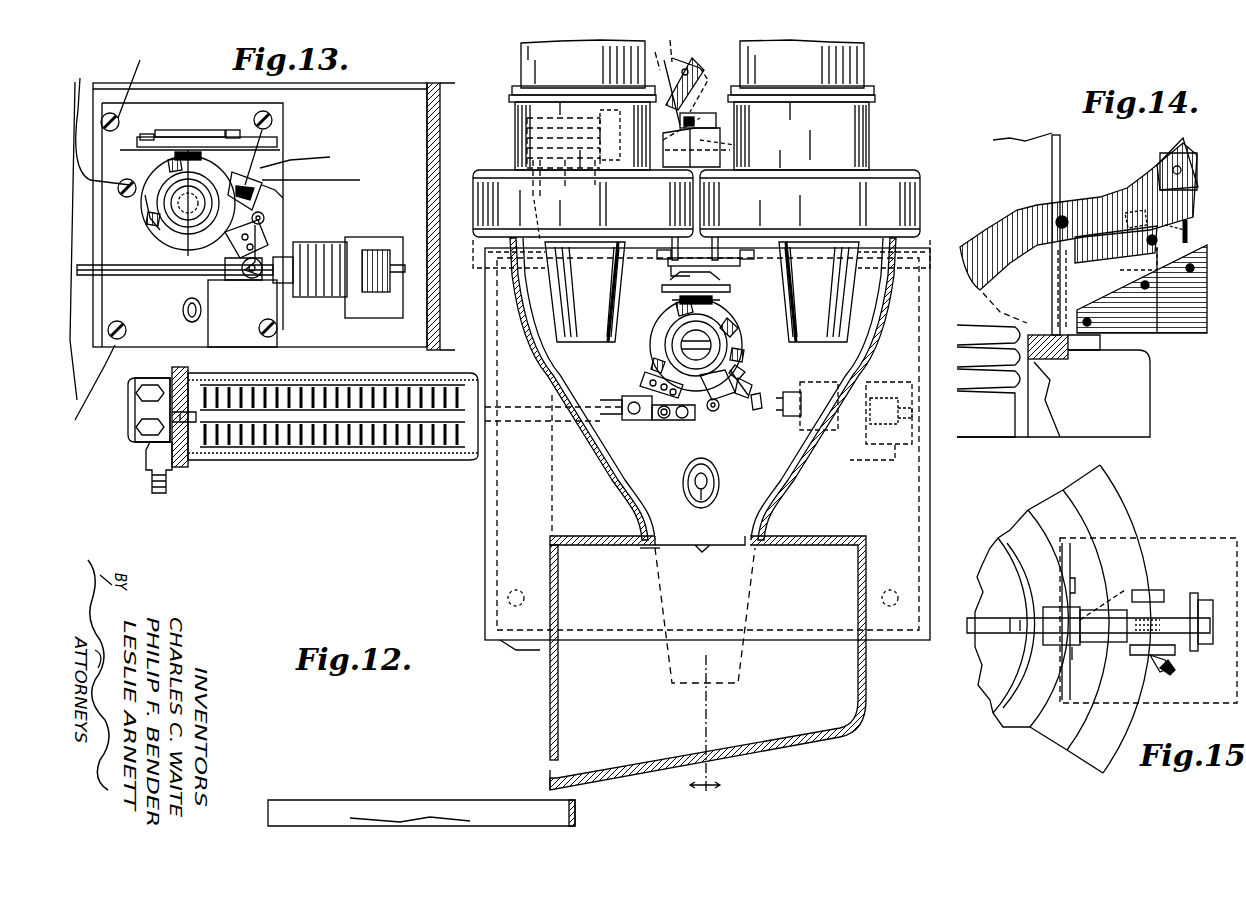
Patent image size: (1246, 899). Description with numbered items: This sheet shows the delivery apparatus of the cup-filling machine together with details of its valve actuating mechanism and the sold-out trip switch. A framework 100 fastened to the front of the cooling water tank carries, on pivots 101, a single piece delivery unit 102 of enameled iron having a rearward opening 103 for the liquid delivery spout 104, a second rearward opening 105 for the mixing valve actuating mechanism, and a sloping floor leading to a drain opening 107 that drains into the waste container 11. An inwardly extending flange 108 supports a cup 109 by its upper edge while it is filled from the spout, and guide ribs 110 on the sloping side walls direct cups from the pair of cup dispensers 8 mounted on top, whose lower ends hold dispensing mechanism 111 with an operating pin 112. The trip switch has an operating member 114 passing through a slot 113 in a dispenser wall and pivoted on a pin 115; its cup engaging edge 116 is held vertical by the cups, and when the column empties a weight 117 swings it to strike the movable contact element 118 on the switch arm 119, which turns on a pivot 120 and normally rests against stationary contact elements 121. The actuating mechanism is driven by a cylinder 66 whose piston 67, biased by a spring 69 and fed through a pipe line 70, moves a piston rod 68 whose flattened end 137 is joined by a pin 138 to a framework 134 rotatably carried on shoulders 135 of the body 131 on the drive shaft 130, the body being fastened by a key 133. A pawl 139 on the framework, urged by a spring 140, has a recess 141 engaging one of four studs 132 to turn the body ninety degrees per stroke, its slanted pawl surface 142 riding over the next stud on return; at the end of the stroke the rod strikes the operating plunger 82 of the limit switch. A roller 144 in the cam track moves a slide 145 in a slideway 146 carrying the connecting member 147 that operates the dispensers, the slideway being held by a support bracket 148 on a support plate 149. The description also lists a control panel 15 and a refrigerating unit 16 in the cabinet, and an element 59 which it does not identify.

In FIG. 12, the cup dispensers 8 is at (521, 70).
In FIG. 12, the waste container 11 is at (576, 806).
In FIG. 12, the control panel 15 is at (660, 53).
In FIG. 12, the refrigerating unit 16 is at (706, 732).
In FIG. 12, the knob 59 is at (884, 382).
In FIG. 13, the knob 59 is at (350, 250).
In FIG. 13, the cylinder 66 is at (255, 460).
In FIG. 13, the piston 67 is at (188, 462).
In FIG. 13, the piston rod 68 is at (150, 276).
In FIG. 13, the spring 69 is at (310, 447).
In FIG. 13, the pipe line 70 is at (152, 493).
In FIG. 12, the operating plunger 82 is at (835, 382).
In FIG. 13, the operating plunger 82 is at (242, 313).
In FIG. 12, the framework 100 is at (478, 565).
In FIG. 12, the pivots 101 is at (486, 246).
In FIG. 12, the delivery unit 102 is at (782, 537).
In FIG. 12, the rearward opening 103 is at (720, 490).
In FIG. 12, the liquid delivery spout 104 is at (720, 476).
In FIG. 13, the liquid delivery spout 104 is at (202, 308).
In FIG. 12, the second rearward opening 105 is at (757, 412).
In FIG. 12, the drain opening 107 is at (556, 773).
In FIG. 12, the inwardly extending flange 108 is at (650, 550).
In FIG. 12, the cup 109 is at (672, 666).
In FIG. 12, the guide ribs 110 is at (645, 470).
In FIG. 12, the dispensing mechanism 111 is at (515, 120).
In FIG. 14, the dispensing mechanism 111 is at (1082, 341).
In FIG. 15, the dispensing mechanism 111 is at (1063, 619).
In FIG. 12, the operating pin 112 is at (695, 228).
In FIG. 14, the slot 113 is at (1050, 185).
In FIG. 15, the slot 113 is at (1060, 627).
In FIG. 12, the operating member 114 is at (705, 72).
In FIG. 14, the operating member 114 is at (1030, 208).
In FIG. 15, the operating member 114 is at (1170, 660).
In FIG. 14, the pin 115 is at (1066, 214).
In FIG. 15, the pin 115 is at (1107, 593).
In FIG. 14, the cup engaging edge 116 is at (985, 245).
In FIG. 15, the cup engaging edge 116 is at (990, 625).
In FIG. 12, the weight 117 is at (688, 62).
In FIG. 14, the weight 117 is at (1193, 158).
In FIG. 15, the weight 117 is at (1190, 652).
In FIG. 12, the movable contact element 118 is at (700, 113).
In FIG. 14, the movable contact element 118 is at (1190, 232).
In FIG. 15, the movable contact element 118 is at (1195, 593).
In FIG. 12, the switch arm 119 is at (718, 128).
In FIG. 14, the switch arm 119 is at (1110, 267).
In FIG. 14, the pivot 120 is at (1150, 235).
In FIG. 12, the stationary contact elements 121 is at (640, 118).
In FIG. 14, the stationary contact elements 121 is at (1198, 222).
In FIG. 15, the stationary contact elements 121 is at (1165, 590).
In FIG. 12, the drive shaft 130 is at (668, 340).
In FIG. 13, the drive shaft 130 is at (178, 240).
In FIG. 12, the body 131 is at (660, 326).
In FIG. 13, the body 131 is at (180, 258).
In FIG. 12, the projecting studs 132 is at (676, 308).
In FIG. 13, the projecting studs 132 is at (168, 163).
In FIG. 12, the key 133 is at (746, 370).
In FIG. 13, the key 133 is at (148, 208).
In FIG. 13, the framework 134 is at (210, 203).
In FIG. 12, the shoulders 135 is at (776, 296).
In FIG. 12, the flattened end 137 is at (560, 437).
In FIG. 13, the flattened end 137 is at (279, 241).
In FIG. 12, the pin 138 is at (648, 420).
In FIG. 13, the pin 138 is at (252, 280).
In FIG. 12, the pawl 139 is at (712, 385).
In FIG. 13, the pawl 139 is at (262, 180).
In FIG. 12, the spring 140 is at (713, 412).
In FIG. 13, the spring 140 is at (262, 176).
In FIG. 12, the recess 141 is at (742, 396).
In FIG. 13, the recess 141 is at (268, 165).
In FIG. 12, the pawl surface 142 is at (665, 381).
In FIG. 13, the pawl surface 142 is at (234, 239).
In FIG. 12, the roller 144 is at (714, 300).
In FIG. 13, the roller 144 is at (207, 155).
In FIG. 12, the slide 145 is at (770, 280).
In FIG. 13, the slide 145 is at (178, 130).
In FIG. 12, the slideway 146 is at (664, 260).
In FIG. 13, the slideway 146 is at (150, 136).
In FIG. 12, the connecting member 147 is at (748, 256).
In FIG. 13, the connecting member 147 is at (195, 132).
In FIG. 13, the support bracket 148 is at (228, 132).
In FIG. 13, the support plate 149 is at (278, 327).